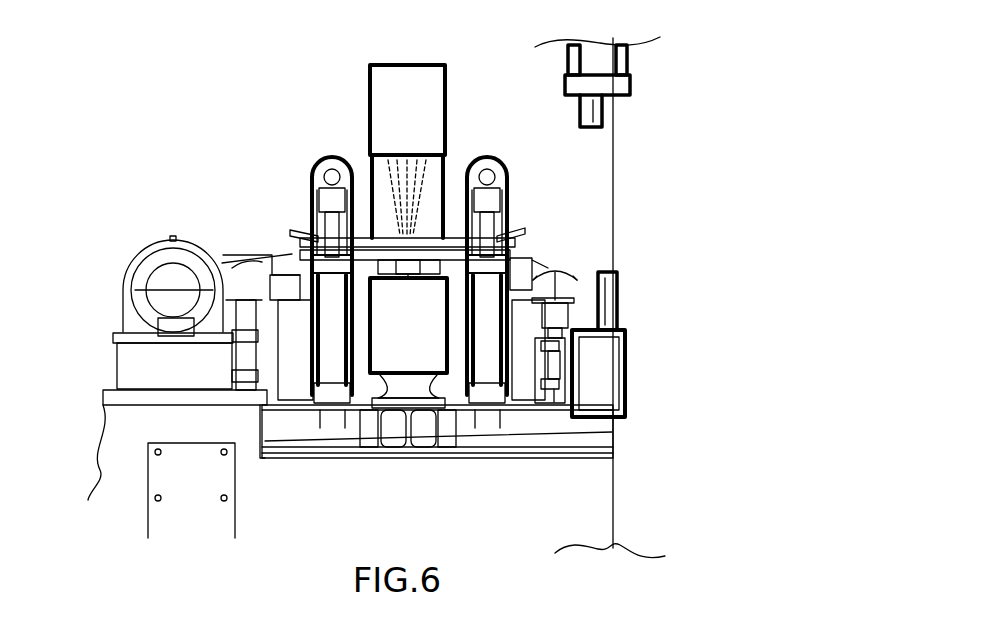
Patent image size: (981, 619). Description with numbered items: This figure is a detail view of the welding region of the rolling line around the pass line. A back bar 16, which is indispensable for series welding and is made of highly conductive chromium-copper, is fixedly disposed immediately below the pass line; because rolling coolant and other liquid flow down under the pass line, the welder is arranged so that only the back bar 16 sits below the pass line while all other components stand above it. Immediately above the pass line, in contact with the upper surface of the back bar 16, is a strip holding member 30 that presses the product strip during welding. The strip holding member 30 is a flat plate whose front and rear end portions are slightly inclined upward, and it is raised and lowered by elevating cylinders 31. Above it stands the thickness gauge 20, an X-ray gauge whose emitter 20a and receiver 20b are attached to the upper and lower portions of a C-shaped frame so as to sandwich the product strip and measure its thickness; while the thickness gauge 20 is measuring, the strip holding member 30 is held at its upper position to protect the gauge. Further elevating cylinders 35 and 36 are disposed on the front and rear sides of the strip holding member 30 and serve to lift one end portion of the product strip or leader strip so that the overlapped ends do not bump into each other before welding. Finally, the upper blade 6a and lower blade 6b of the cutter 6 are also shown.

The cutter 6 is at (600, 297).
The upper blade 6a is at (602, 122).
The lower blade 6b is at (618, 290).
The back bar 16 is at (325, 280).
The thickness gauge 20 is at (353, 220).
The emitter 20a is at (392, 118).
The receiver 20b is at (392, 348).
The strip holding member 30 is at (525, 228).
The elevating cylinders 31 is at (337, 362).
The elevating cylinder 35 is at (558, 328).
The elevating cylinder 36 is at (233, 268).